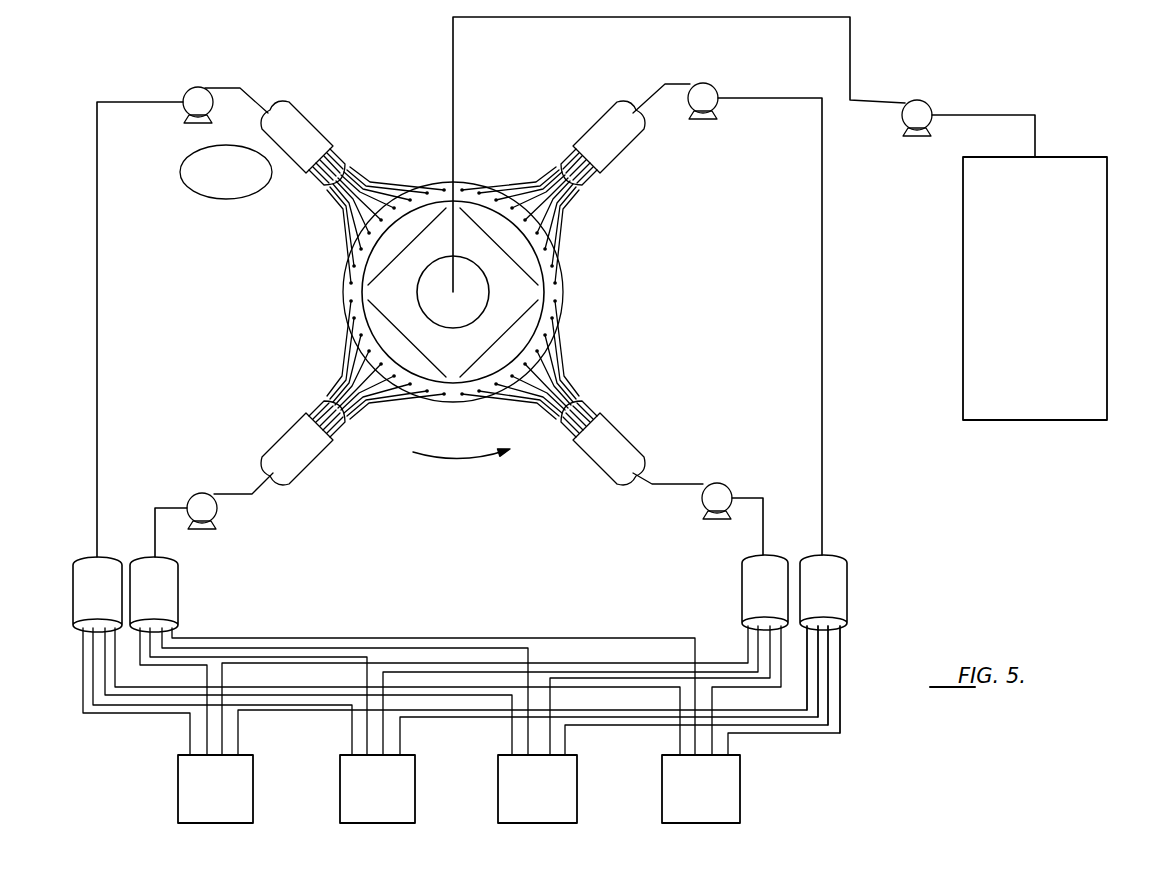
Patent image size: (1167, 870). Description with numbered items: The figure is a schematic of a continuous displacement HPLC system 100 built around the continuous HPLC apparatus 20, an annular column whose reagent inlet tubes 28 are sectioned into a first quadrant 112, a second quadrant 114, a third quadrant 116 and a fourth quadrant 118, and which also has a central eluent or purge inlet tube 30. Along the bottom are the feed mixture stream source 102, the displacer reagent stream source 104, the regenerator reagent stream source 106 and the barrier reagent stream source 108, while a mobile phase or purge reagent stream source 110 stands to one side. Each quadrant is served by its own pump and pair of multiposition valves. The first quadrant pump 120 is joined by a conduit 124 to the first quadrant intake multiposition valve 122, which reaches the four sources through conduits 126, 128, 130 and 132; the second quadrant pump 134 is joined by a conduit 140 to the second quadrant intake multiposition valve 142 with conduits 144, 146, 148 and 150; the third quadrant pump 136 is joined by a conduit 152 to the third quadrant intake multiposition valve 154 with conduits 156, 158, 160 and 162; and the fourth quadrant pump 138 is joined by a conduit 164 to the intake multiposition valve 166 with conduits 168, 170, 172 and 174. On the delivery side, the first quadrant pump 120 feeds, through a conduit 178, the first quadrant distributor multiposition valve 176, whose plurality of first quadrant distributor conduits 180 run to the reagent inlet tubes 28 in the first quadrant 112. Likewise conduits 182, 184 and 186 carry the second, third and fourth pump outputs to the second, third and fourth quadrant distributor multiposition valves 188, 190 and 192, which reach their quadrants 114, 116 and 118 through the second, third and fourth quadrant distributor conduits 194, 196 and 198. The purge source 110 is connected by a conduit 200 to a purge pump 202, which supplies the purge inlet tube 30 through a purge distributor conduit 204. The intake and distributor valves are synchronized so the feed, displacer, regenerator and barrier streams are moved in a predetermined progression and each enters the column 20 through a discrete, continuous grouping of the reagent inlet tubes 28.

The continuous HPLC apparatus 20 is at (575, 293).
The reagent inlet tubes 28 is at (462, 192).
The eluent or purge inlet tube 30 is at (453, 292).
The continuous displacement HPLC system 100 is at (1007, 521).
The feed mixture stream source 102 is at (741, 800).
The displacer reagent stream source 104 is at (552, 824).
The regenerator reagent stream source 106 is at (392, 824).
The barrier reagent stream source 108 is at (232, 824).
The purge reagent stream source 110 is at (1107, 302).
The first quadrant 112 is at (498, 247).
The second quadrant 114 is at (498, 330).
The third quadrant 116 is at (418, 330).
The fourth quadrant 118 is at (420, 250).
The first quadrant pump 120 is at (718, 90).
The first quadrant intake multiposition valve 122 is at (847, 588).
The conduit 124 is at (824, 405).
The conduit 126 is at (843, 644).
The conduit 128 is at (843, 668).
The conduit 130 is at (843, 692).
The conduit 132 is at (805, 697).
The second quadrant pump 134 is at (728, 486).
The third quadrant pump 136 is at (220, 512).
The fourth quadrant pump 138 is at (203, 88).
The conduit 140 is at (758, 534).
The second quadrant intake multiposition valve 142 is at (742, 584).
The conduit 144 is at (732, 742).
The conduit 146 is at (567, 742).
The conduit 148 is at (402, 740).
The conduit 150 is at (240, 738).
The conduit 152 is at (155, 505).
The third quadrant intake multiposition valve 154 is at (178, 595).
The conduit 156 is at (553, 640).
The conduit 158 is at (453, 645).
The conduit 160 is at (307, 638).
The conduit 162 is at (190, 742).
The conduit 164 is at (97, 330).
The fourth quadrant intake multiposition valve 166 is at (73, 597).
The conduit 168 is at (672, 742).
The conduit 170 is at (512, 740).
The conduit 172 is at (350, 738).
The conduit 174 is at (125, 717).
The first quadrant distributor multiposition valve 176 is at (615, 152).
The conduit 178 is at (653, 90).
The first quadrant distributor conduits 180 is at (573, 235).
The conduit 182 is at (660, 482).
The conduit 184 is at (258, 470).
The conduit 186 is at (262, 108).
The second quadrant distributor multiposition valve 188 is at (600, 468).
The third quadrant distributor multiposition valve 190 is at (305, 462).
The fourth quadrant distributor multiposition valve 192 is at (283, 157).
The second quadrant distributor conduits 194 is at (580, 352).
The third quadrant distributor conduits 196 is at (337, 360).
The fourth quadrant distributor conduits 198 is at (400, 180).
The conduit 200 is at (1037, 140).
The purge pump 202 is at (930, 103).
The purge distributor conduit 204 is at (458, 95).